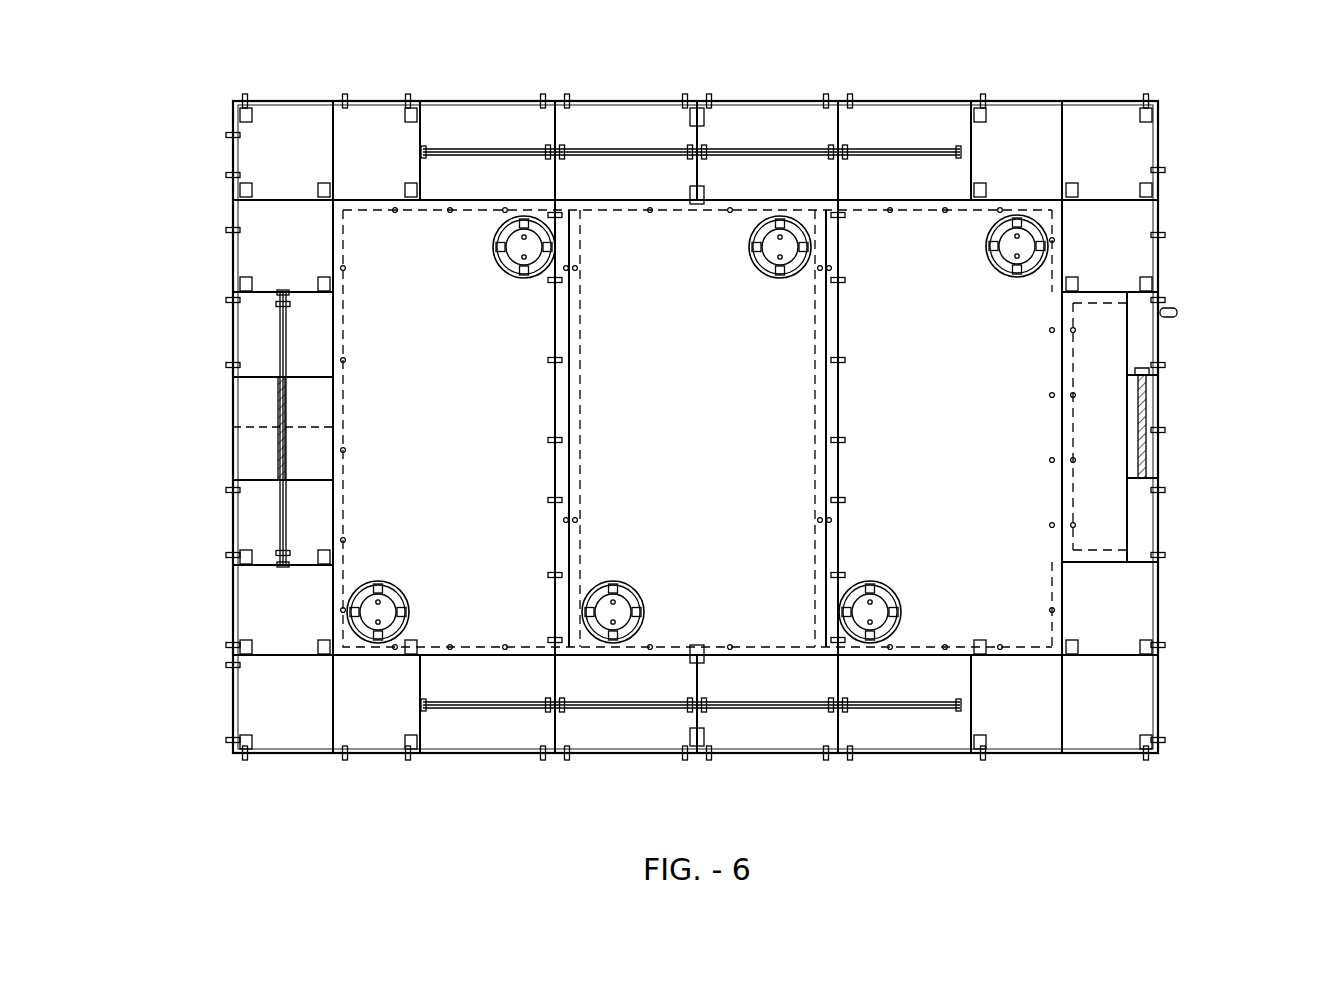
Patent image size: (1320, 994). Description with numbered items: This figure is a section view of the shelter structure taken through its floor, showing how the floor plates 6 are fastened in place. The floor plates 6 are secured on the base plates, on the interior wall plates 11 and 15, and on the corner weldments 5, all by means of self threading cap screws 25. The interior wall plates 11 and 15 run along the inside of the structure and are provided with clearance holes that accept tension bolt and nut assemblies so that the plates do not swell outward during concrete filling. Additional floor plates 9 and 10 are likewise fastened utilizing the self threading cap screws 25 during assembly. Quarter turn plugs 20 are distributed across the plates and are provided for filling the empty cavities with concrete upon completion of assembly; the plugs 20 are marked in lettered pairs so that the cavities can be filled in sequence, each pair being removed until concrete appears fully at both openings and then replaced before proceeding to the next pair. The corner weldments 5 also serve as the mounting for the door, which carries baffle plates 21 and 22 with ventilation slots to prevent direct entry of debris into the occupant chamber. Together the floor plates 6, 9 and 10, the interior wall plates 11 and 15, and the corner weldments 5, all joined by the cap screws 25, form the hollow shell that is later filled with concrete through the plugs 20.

The corner weldment 5 is at (232, 150).
The floor plate 6 is at (533, 146).
The floor plate 9 is at (378, 281).
The floor plate 10 is at (1106, 479).
The interior wall plate 11 is at (458, 191).
The interior wall plate 15 is at (332, 361).
The ¼ turn plug 20 is at (1022, 221).
The baffle plate 21 is at (1149, 456).
The baffle plate 22 is at (1143, 374).
The self threading cap screw 25 is at (334, 266).